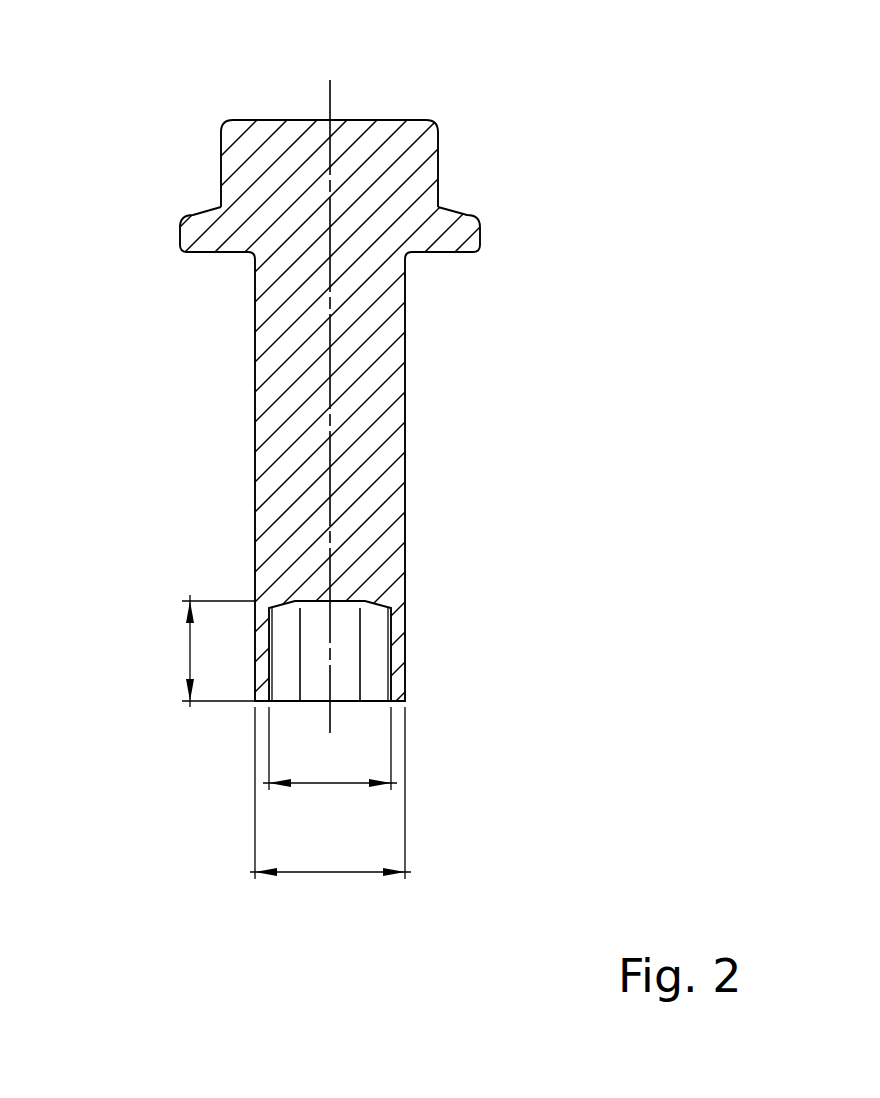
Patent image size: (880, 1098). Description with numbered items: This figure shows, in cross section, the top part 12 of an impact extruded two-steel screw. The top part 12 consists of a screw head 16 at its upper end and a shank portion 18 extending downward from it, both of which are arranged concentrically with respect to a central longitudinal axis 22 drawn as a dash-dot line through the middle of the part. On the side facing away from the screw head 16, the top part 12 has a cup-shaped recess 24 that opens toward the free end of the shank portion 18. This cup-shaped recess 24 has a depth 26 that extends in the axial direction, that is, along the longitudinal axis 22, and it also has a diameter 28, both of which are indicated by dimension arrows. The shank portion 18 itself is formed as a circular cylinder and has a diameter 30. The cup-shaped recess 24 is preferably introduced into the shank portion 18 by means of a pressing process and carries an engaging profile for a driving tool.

The top part 12 is at (432, 229).
The screw head 16 is at (438, 147).
The shank portion 18 is at (404, 372).
The central longitudinal axis 22 is at (330, 91).
The cup-shaped recess 24 is at (345, 602).
The depth 26 is at (190, 648).
The diameter 28 is at (328, 783).
The diameter 30 is at (330, 872).